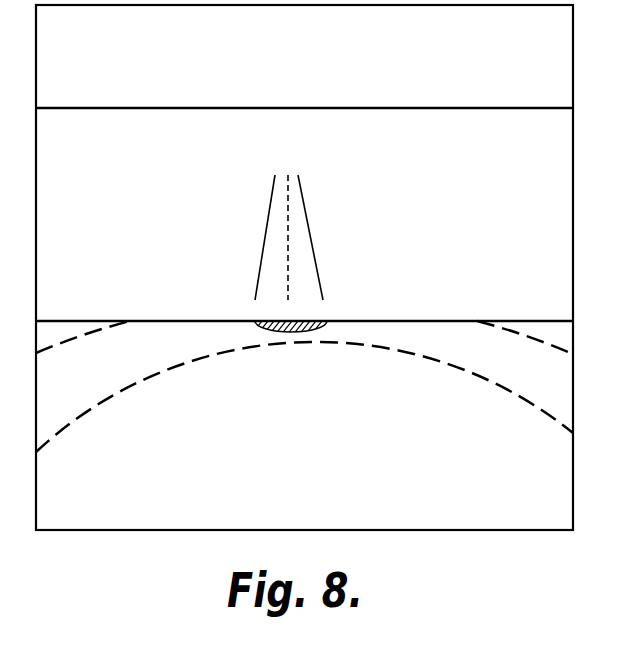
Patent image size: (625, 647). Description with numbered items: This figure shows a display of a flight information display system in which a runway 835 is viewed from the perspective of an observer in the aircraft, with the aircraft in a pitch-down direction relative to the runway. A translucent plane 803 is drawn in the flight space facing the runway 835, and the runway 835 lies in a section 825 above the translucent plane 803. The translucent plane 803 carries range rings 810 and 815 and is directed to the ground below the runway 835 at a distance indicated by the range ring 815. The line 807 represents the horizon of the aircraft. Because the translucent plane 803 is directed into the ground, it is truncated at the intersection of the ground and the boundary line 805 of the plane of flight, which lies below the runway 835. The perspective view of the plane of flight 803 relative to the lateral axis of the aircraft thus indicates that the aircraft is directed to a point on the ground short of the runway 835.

The translucent plane 803 is at (304, 425).
The boundary line 805 is at (175, 320).
The line 807 is at (485, 107).
The range ring 810 is at (445, 366).
The range ring 815 is at (519, 333).
The section 825 is at (304, 214).
The runway 835 is at (311, 239).